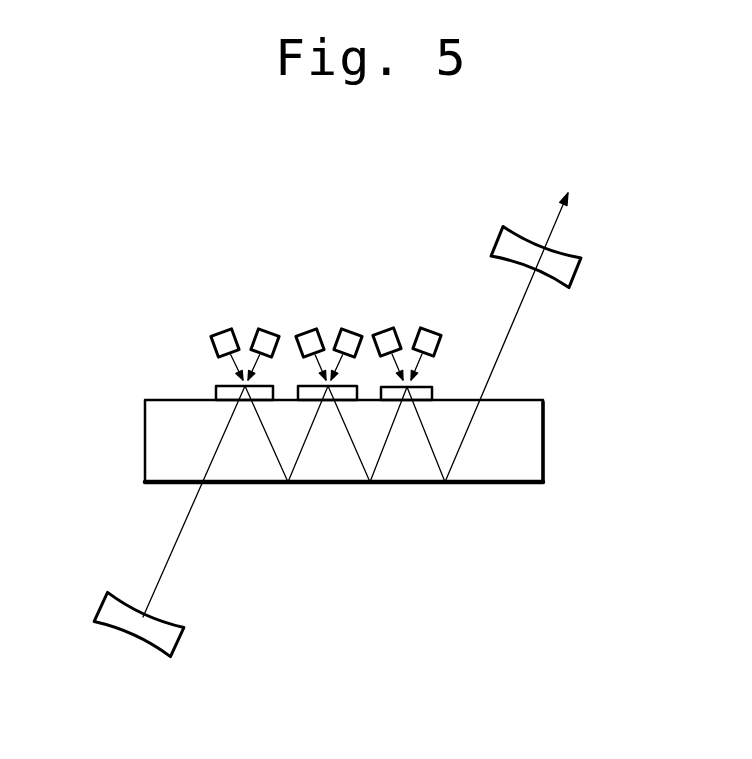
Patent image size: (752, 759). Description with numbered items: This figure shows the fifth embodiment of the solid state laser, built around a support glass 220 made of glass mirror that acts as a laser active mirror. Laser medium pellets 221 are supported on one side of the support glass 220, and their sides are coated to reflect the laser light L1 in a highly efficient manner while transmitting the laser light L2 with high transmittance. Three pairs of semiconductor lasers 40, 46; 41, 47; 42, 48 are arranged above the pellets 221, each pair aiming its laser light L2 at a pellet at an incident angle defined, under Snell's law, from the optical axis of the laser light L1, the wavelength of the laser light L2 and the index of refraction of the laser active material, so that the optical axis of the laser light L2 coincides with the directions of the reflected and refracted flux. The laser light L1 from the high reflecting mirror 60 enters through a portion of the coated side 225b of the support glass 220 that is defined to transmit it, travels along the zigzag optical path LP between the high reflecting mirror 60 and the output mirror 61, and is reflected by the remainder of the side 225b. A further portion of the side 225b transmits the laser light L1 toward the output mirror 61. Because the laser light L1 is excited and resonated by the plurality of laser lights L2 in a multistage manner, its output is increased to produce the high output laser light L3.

The semiconductor laser 40 is at (221, 334).
The semiconductor laser 41 is at (308, 331).
The semiconductor laser 42 is at (386, 330).
The semiconductor laser 46 is at (264, 332).
The semiconductor laser 47 is at (352, 331).
The semiconductor laser 48 is at (428, 328).
The high reflecting mirror 60 is at (137, 642).
The output mirror 61 is at (577, 273).
The support glass 220 is at (543, 445).
The laser medium pellet 221 is at (217, 385).
The side of the support glass 225b is at (470, 484).
The zigzag optical path LP is at (177, 438).
The laser light L1 is at (162, 568).
The laser light L2 is at (242, 372).
The high output laser light L3 is at (553, 218).